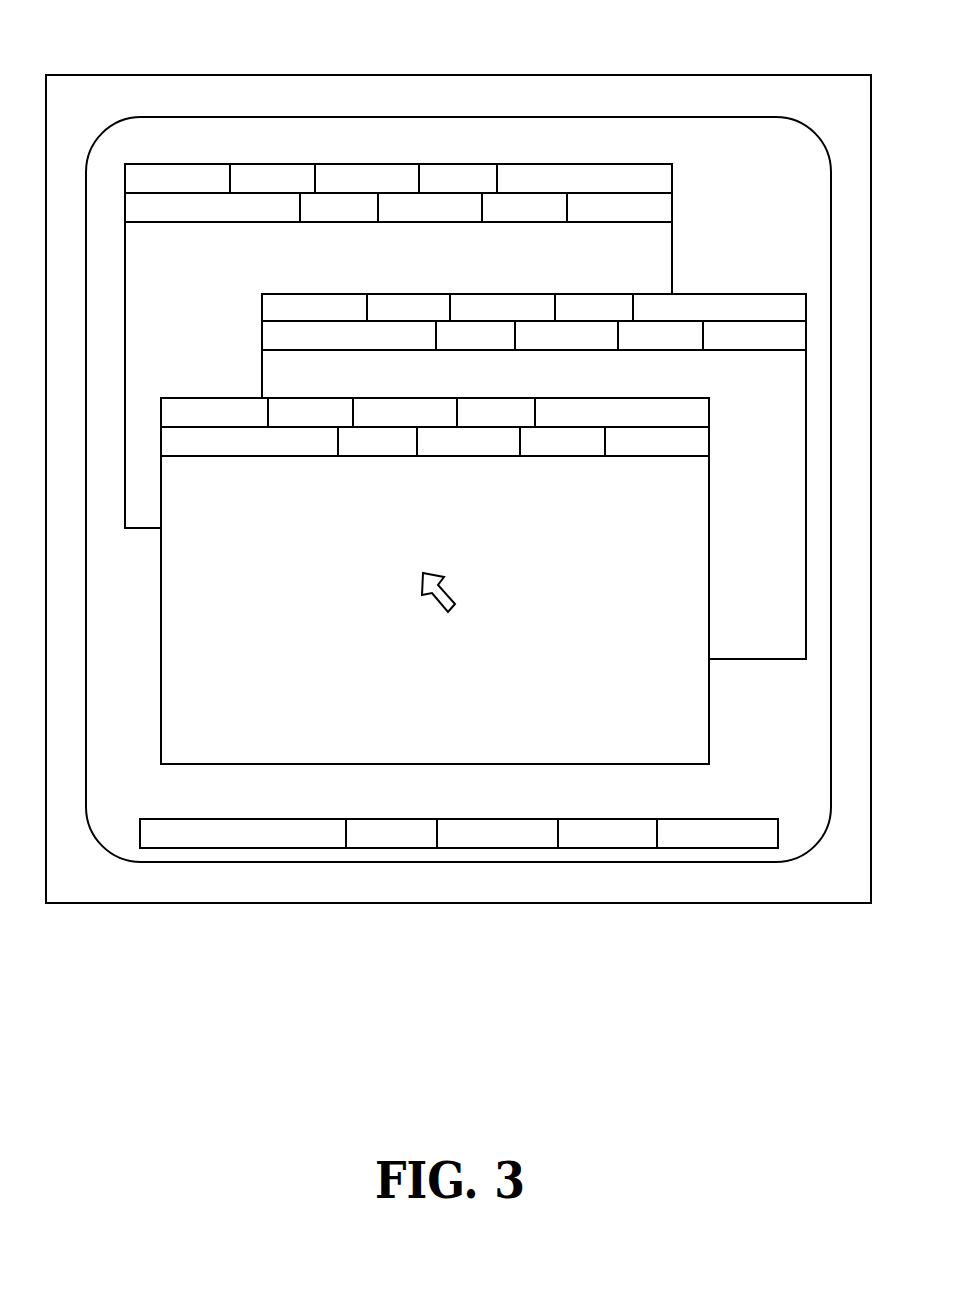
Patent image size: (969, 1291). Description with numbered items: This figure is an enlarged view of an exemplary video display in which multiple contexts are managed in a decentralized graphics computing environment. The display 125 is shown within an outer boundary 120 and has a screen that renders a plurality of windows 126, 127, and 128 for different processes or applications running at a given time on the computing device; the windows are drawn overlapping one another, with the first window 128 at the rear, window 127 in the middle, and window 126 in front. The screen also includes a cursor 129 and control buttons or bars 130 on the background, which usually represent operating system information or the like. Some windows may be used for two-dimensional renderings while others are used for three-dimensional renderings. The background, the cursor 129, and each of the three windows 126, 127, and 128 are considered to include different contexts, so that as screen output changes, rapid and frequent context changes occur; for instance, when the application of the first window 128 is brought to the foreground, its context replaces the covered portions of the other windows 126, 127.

The computing device 120 is at (352, 74).
The display 125 is at (512, 142).
The window 126 is at (167, 397).
The window 127 is at (720, 294).
The first window 128 is at (615, 164).
The cursor 129 is at (455, 600).
The control buttons or bars 130 is at (727, 819).